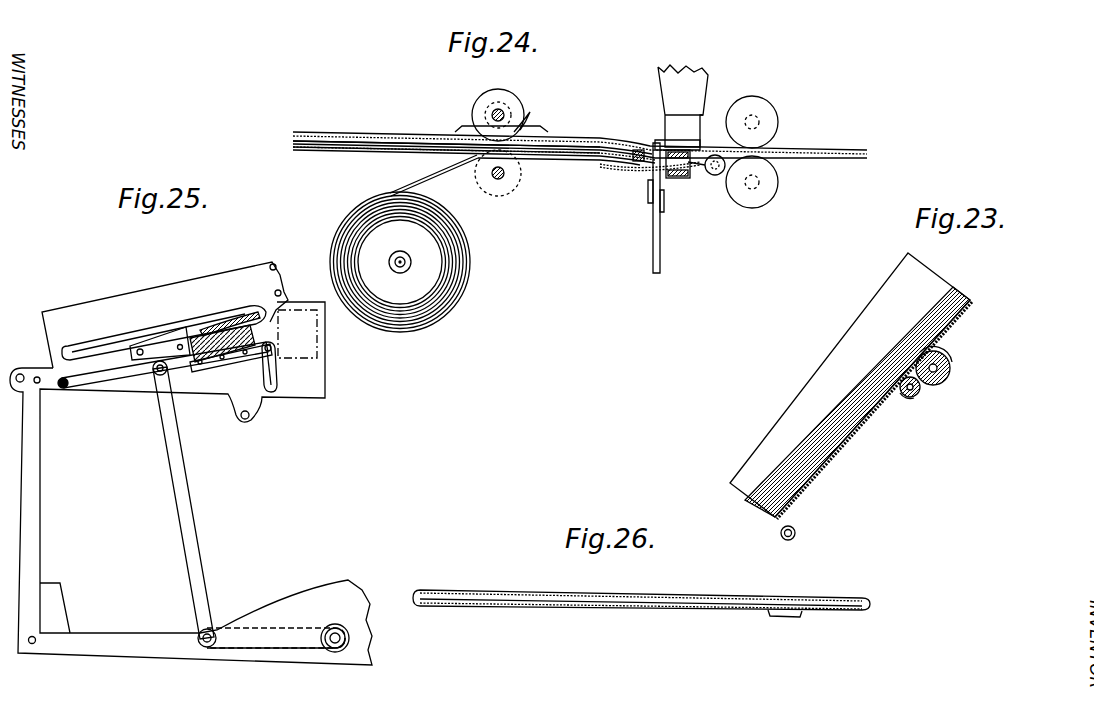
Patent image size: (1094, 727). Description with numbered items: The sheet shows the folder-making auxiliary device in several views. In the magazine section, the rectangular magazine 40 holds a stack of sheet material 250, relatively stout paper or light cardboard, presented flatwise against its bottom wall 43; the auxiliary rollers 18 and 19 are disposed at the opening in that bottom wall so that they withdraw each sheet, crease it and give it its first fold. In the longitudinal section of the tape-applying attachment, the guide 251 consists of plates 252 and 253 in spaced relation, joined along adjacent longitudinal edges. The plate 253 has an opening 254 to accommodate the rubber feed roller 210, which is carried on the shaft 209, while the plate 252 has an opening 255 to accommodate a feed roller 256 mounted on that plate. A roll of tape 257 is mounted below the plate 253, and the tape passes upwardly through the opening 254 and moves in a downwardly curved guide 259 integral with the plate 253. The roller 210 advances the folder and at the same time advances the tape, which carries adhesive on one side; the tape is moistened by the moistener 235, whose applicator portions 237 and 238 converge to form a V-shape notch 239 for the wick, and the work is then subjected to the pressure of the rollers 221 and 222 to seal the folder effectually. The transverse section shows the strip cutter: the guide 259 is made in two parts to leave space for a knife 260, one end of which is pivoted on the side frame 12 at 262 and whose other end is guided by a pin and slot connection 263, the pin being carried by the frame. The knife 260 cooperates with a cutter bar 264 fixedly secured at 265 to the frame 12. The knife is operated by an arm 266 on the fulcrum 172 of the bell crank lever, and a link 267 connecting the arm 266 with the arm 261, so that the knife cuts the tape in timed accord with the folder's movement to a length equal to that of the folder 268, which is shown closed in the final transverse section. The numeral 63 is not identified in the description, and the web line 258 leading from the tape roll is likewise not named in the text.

In FIG. 25, the side frame 12 is at (42, 456).
In FIG. 23, the auxiliary roller 18 is at (913, 398).
In FIG. 23, the auxiliary roller 19 is at (950, 368).
In FIG. 23, the magazine 40 is at (856, 322).
In FIG. 23, the bottom wall 43 is at (846, 455).
In FIG. 26, the strip 63 is at (455, 607).
In FIG. 25, the fulcrum 172 is at (335, 650).
In FIG. 24, the shaft 209 is at (505, 173).
In FIG. 24, the rubber feed roller 210 is at (506, 197).
In FIG. 24, the pressure roller 221 is at (757, 108).
In FIG. 24, the pressure roller 222 is at (751, 196).
In FIG. 24, the moistener 235 is at (654, 94).
In FIG. 25, the moistener 235 is at (320, 350).
In FIG. 24, the applicator portion 237 is at (679, 180).
In FIG. 24, the applicator portion 238 is at (708, 176).
In FIG. 24, the V-shape notch 239 is at (660, 128).
In FIG. 23, the sheet material 250 is at (828, 448).
In FIG. 24, the guide 251 is at (416, 127).
In FIG. 24, the plate 252 is at (418, 142).
In FIG. 24, the plate 253 is at (378, 145).
In FIG. 24, the opening 254 is at (470, 128).
In FIG. 24, the opening 255 is at (528, 128).
In FIG. 24, the feed roller 256 is at (516, 108).
In FIG. 24, the roll of tape 257 is at (420, 318).
In FIG. 25, the roll of tape 257 is at (280, 290).
In FIG. 26, the roll of tape 257 is at (792, 618).
In FIG. 24, the web 258 is at (478, 166).
In FIG. 24, the guide 259 is at (628, 167).
In FIG. 24, the knife 260 is at (653, 190).
In FIG. 25, the knife 260 is at (238, 346).
In FIG. 24, the arm 261 is at (650, 205).
In FIG. 25, the arm 261 is at (150, 380).
In FIG. 25, the pivot 262 is at (64, 388).
In FIG. 25, the pin and slot connection 263 is at (277, 375).
In FIG. 24, the cutter bar 264 is at (637, 150).
In FIG. 25, the cutter bar 264 is at (212, 322).
In FIG. 25, the securing point 265 is at (160, 343).
In FIG. 25, the arm 266 is at (268, 630).
In FIG. 24, the link 267 is at (665, 226).
In FIG. 25, the link 267 is at (190, 512).
In FIG. 24, the folder 268 is at (601, 163).
In FIG. 26, the folder 268 is at (586, 610).